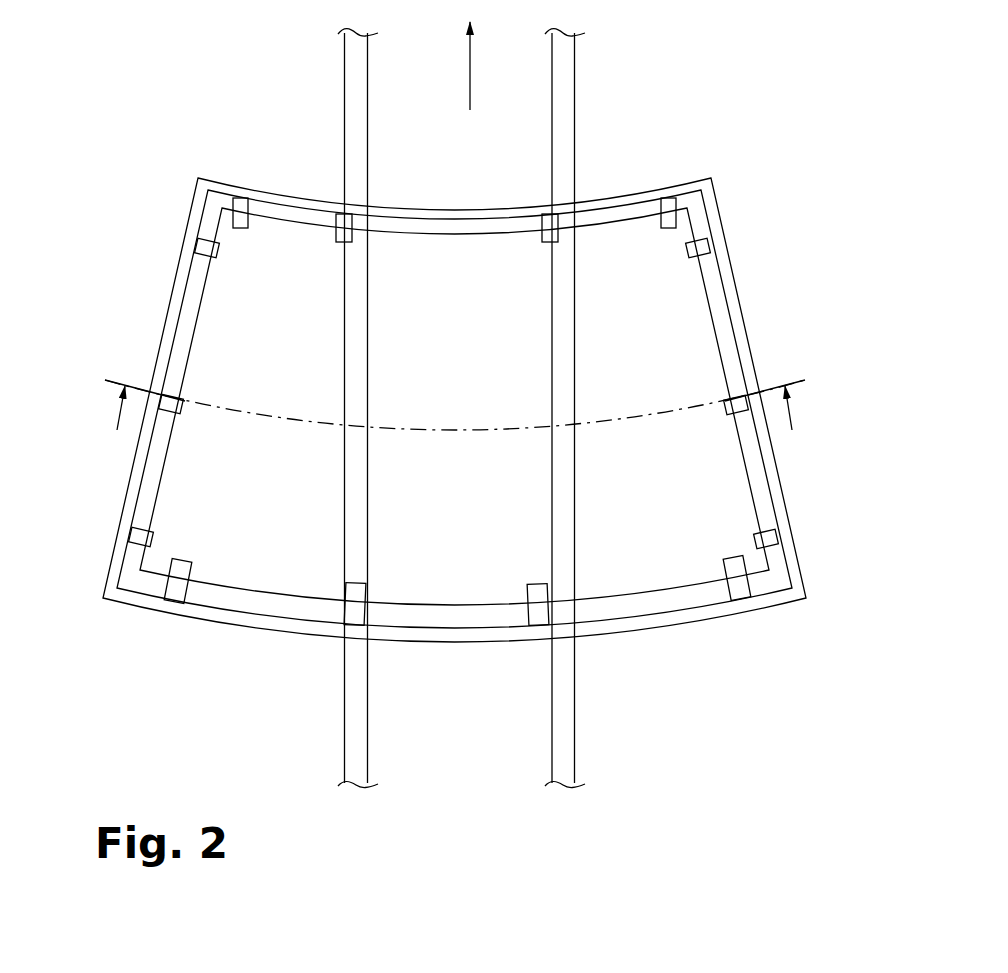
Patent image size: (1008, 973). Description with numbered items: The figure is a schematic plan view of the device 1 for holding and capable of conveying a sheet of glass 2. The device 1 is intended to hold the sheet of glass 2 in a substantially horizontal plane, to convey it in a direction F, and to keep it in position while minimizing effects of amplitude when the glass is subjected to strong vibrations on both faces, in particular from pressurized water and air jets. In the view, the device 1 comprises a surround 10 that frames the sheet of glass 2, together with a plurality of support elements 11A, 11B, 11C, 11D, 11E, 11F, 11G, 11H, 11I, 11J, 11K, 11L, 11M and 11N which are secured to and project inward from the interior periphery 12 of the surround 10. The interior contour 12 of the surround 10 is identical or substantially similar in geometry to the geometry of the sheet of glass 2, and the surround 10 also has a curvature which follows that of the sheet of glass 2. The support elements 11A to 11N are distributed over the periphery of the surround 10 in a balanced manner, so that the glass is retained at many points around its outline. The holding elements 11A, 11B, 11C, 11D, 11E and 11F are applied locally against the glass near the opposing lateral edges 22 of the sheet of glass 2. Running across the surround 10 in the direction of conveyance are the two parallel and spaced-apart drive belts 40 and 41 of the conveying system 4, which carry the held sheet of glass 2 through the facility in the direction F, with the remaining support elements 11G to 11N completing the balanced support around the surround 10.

The device 1 is at (149, 271).
The sheet of glass 2 is at (419, 258).
The conveying system 4 is at (388, 733).
The surround 10 is at (724, 227).
The interior periphery 12 is at (186, 297).
The lateral edges 22 is at (481, 236).
The drive belt 40 is at (353, 723).
The drive belt 41 is at (560, 735).
The support element 11A is at (162, 536).
The support element 11B is at (200, 413).
The support element 11C is at (221, 258).
The support element 11D is at (250, 229).
The support element 11E is at (326, 242).
The support element 11F is at (534, 244).
The support element 11G is at (656, 223).
The support element 11H is at (680, 250).
The support element 11I is at (717, 410).
The support element 11J is at (750, 540).
The support element 11K is at (715, 566).
The support element 11L is at (508, 592).
The support element 11M is at (344, 592).
The support element 11N is at (190, 564).